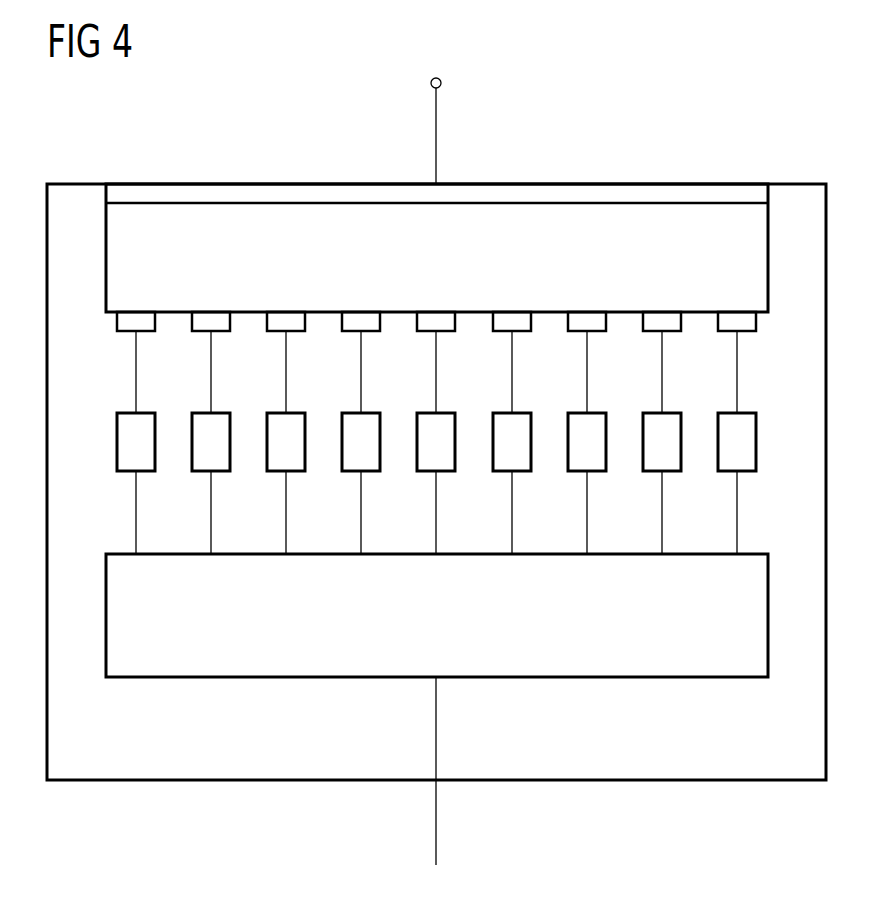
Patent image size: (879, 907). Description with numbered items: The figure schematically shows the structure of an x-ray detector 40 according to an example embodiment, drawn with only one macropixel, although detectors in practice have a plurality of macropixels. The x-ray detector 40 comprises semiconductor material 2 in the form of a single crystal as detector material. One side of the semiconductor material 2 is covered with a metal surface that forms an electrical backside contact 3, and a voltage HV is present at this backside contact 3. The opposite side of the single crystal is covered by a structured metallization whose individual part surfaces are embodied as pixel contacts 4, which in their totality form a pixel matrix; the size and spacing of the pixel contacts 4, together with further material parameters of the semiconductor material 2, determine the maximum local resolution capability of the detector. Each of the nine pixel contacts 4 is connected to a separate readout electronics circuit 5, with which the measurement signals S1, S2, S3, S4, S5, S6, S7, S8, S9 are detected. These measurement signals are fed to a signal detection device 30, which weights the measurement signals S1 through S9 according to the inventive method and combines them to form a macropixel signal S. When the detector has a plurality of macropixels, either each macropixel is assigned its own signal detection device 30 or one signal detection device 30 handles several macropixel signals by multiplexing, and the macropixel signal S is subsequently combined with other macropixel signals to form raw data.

The x-ray detector 40 is at (728, 100).
The voltage HV is at (442, 113).
The semiconductor material 2 is at (757, 257).
The electrical backside contact 3 is at (627, 192).
The pixel contacts 4 is at (117, 322).
The readout electronics circuits 5 is at (117, 445).
The measurement signal S1 is at (136, 519).
The measurement signal S2 is at (211, 519).
The measurement signal S3 is at (286, 519).
The measurement signal S4 is at (361, 519).
The measurement signal S5 is at (436, 519).
The measurement signal S6 is at (512, 519).
The measurement signal S7 is at (587, 519).
The measurement signal S8 is at (662, 519).
The measurement signal S9 is at (737, 519).
The signal detection device 30 is at (336, 680).
The macropixel signal S is at (436, 830).